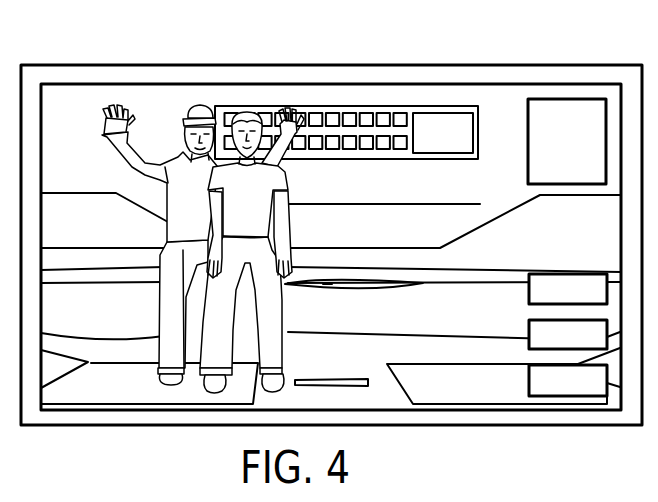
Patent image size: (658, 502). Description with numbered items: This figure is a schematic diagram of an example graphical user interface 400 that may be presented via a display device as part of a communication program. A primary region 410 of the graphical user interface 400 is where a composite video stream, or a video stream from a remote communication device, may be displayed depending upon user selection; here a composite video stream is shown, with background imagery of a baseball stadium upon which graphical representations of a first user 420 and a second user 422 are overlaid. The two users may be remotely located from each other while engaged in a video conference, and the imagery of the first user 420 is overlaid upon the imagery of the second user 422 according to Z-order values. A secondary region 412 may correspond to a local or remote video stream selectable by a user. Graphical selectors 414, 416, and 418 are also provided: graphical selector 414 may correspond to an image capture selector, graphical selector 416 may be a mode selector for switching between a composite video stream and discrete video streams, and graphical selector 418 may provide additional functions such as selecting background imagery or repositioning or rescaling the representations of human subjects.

The graphical user interface 400 is at (88, 75).
The primary region 410 is at (95, 132).
The secondary region 412 is at (585, 162).
The graphical selector 414 is at (585, 298).
The graphical selector 416 is at (585, 346).
The graphical selector 418 is at (585, 393).
The first user 420 is at (252, 114).
The second user 422 is at (202, 105).